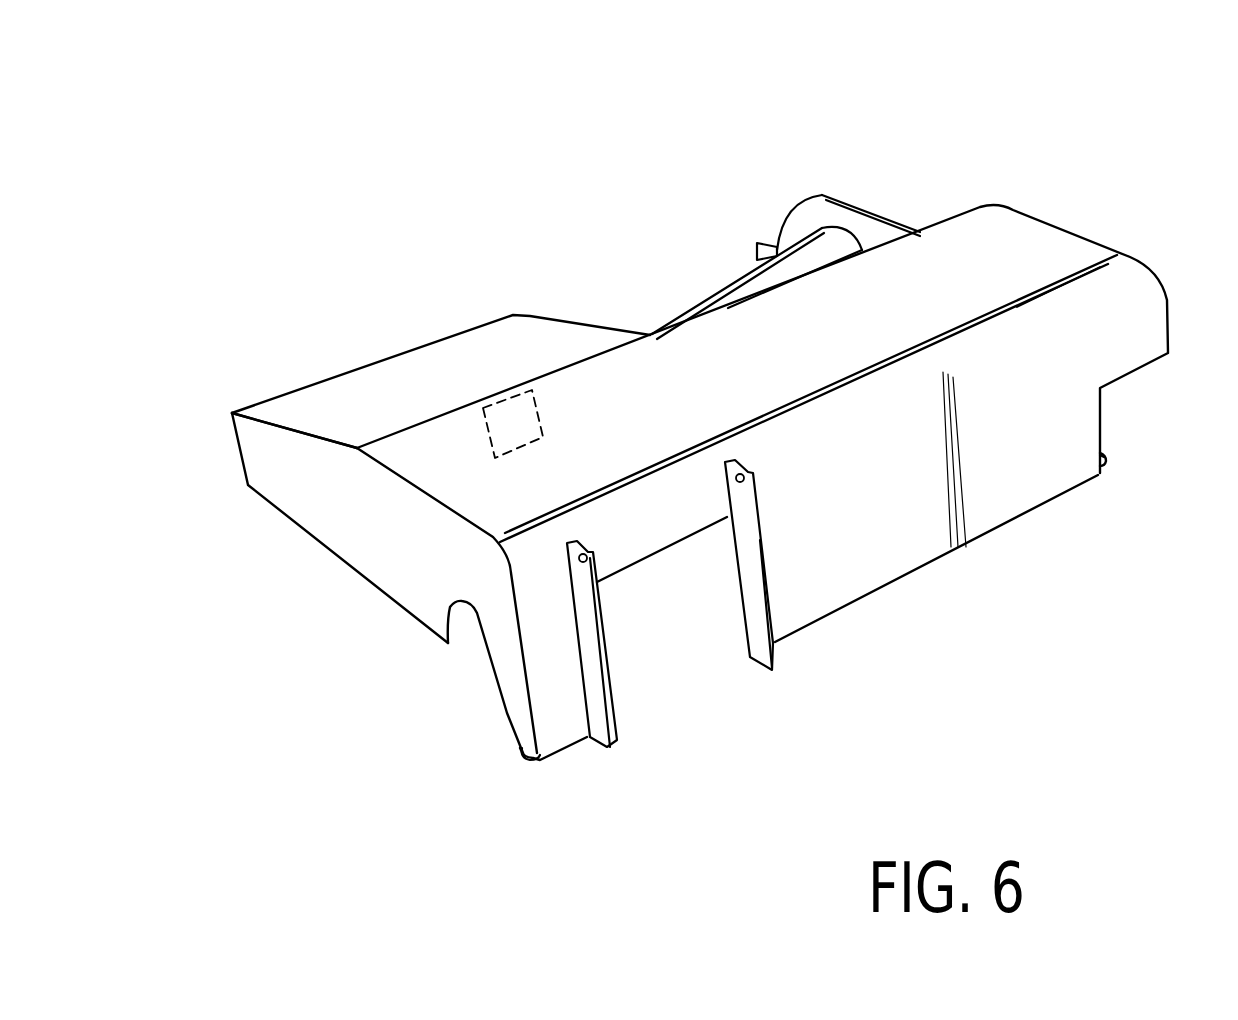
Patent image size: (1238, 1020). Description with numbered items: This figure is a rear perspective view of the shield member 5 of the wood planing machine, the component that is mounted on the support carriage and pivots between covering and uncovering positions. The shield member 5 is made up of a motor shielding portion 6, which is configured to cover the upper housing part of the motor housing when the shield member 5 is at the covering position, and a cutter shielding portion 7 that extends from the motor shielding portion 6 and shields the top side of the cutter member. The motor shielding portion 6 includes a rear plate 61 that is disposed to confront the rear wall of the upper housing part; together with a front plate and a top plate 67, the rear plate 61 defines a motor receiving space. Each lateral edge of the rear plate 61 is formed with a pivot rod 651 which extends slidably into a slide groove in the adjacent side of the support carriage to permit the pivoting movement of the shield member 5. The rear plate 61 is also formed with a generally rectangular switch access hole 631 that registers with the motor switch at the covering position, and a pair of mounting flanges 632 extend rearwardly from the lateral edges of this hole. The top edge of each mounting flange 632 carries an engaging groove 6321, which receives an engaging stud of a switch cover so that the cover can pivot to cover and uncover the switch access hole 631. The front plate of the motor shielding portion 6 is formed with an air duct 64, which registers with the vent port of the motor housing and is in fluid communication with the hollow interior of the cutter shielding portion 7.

The shield member 5 is at (1118, 255).
The motor shielding portion 6 is at (1022, 224).
The cutter shielding portion 7 is at (395, 358).
The rear plate 61 is at (1007, 508).
The air duct 64 is at (558, 406).
The top plate 67 is at (420, 465).
The switch access hole 631 is at (673, 630).
The mounting flange 632 is at (585, 660).
The engaging groove 6321 is at (583, 578).
The pivot rod 651 is at (537, 775).